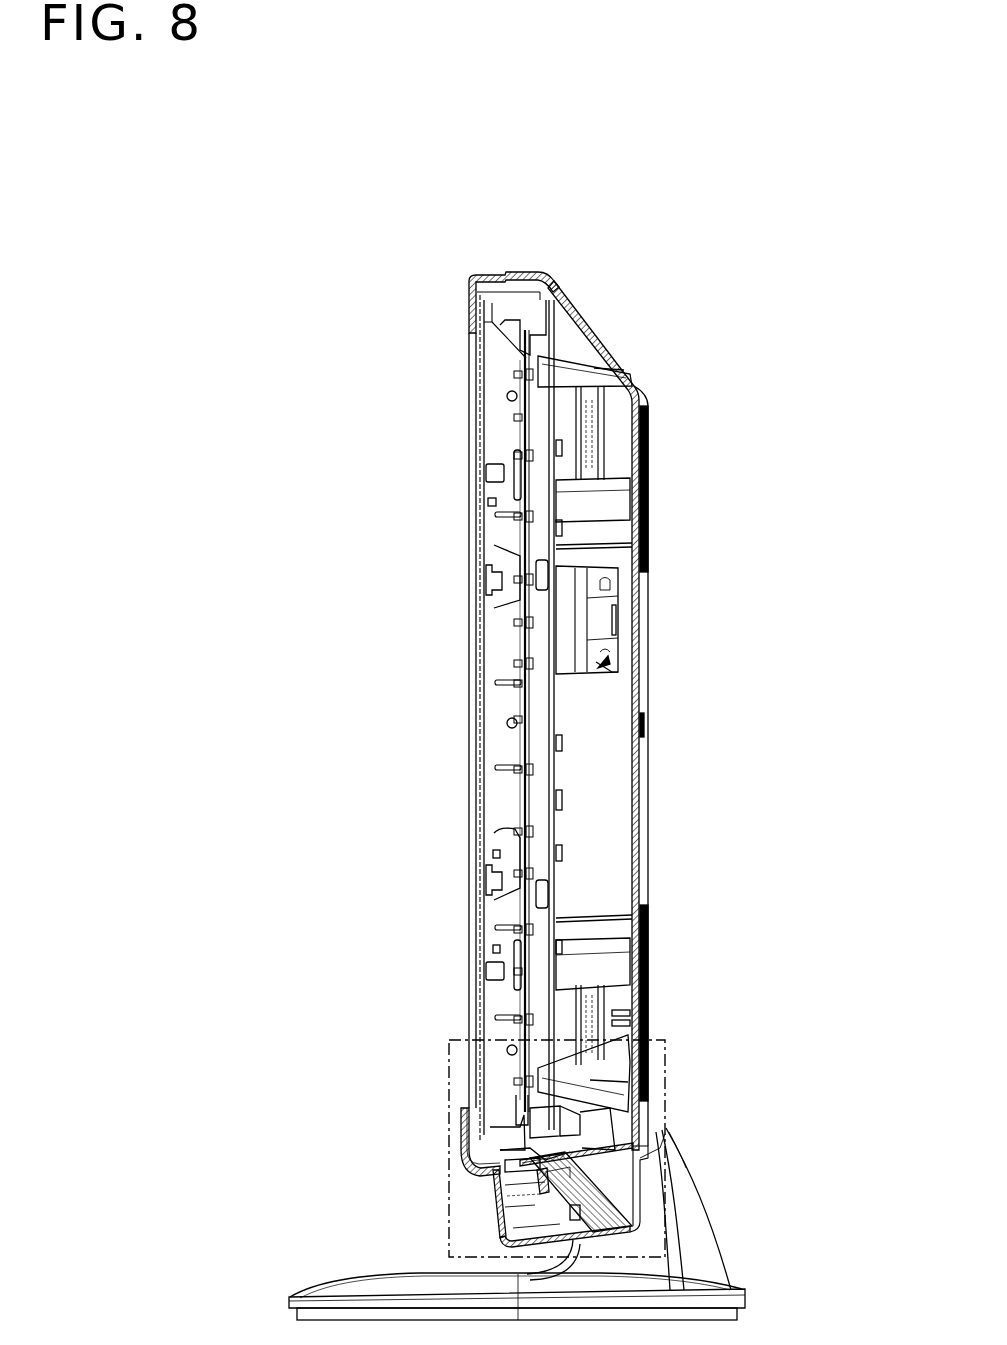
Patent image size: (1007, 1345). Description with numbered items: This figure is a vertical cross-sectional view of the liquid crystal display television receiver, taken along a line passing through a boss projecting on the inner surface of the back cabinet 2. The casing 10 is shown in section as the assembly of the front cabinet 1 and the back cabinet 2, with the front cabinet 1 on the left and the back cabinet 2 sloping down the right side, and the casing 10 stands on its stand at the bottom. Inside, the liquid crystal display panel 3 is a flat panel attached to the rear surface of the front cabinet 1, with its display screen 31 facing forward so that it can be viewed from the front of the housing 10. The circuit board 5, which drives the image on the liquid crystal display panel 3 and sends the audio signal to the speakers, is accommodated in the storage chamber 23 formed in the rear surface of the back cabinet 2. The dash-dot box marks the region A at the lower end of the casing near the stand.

The casing 10 is at (562, 173).
The front cabinet 1 is at (471, 292).
The back cabinet 2 is at (578, 297).
The liquid crystal display panel 3 is at (496, 823).
The circuit board 5 is at (590, 626).
The storage chamber 23 is at (604, 662).
The display screen 31 is at (476, 779).
The region A is at (666, 1098).